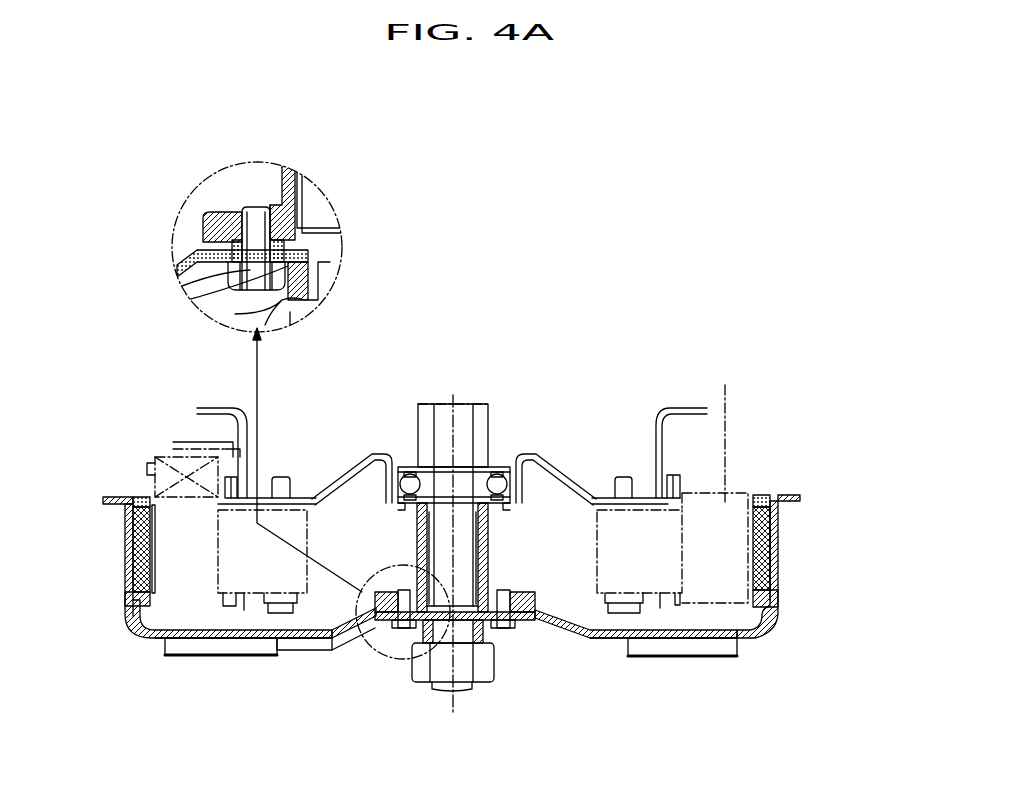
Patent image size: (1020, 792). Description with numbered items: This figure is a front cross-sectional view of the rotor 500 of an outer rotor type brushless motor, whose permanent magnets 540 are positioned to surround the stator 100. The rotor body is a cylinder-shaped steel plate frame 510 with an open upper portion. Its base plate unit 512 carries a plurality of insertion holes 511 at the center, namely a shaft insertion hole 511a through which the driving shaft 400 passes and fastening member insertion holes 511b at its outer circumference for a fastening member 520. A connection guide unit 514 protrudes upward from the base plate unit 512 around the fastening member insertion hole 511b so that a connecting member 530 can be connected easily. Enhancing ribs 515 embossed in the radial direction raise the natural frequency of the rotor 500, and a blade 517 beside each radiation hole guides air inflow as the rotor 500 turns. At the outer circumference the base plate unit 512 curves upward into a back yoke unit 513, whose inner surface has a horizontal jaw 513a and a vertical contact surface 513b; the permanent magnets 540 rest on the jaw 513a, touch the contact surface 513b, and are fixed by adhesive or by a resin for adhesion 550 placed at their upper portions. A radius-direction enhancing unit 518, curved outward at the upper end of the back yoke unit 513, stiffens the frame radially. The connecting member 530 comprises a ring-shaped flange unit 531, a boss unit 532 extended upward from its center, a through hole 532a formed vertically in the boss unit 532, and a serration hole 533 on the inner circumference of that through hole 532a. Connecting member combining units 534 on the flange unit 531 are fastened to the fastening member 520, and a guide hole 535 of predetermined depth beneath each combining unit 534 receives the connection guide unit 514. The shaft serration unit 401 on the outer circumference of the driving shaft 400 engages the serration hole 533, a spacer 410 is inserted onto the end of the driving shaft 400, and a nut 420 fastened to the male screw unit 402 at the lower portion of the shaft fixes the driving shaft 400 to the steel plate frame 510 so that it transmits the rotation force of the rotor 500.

The stator 100 is at (452, 487).
The driving shaft 400 is at (410, 440).
The shaft serration unit 401 is at (420, 585).
The male screw unit 402 is at (483, 632).
The spacer 410 is at (440, 615).
The nut 420 is at (482, 665).
The rotor 500 is at (100, 482).
The steel plate frame 510 is at (141, 639).
The insertion holes 511 is at (375, 131).
The shaft insertion hole 511a is at (310, 256).
The fastening member insertion holes 511b is at (266, 233).
The base plate unit 512 is at (310, 638).
The back yoke unit 513 is at (128, 566).
The jaw 513a is at (775, 598).
The contact surface 513b is at (780, 527).
The connection guide unit 514 is at (232, 250).
The enhancing ribs 515 is at (320, 655).
The blade 517 is at (183, 655).
The radius-direction enhancing unit 518 is at (788, 496).
The fastening member 520 is at (238, 268).
The connecting member 530 is at (492, 572).
The flange unit 531 is at (228, 228).
The boss unit 532 is at (497, 568).
The through hole 532a is at (444, 512).
The serration hole 533 is at (470, 530).
The connecting member combining units 534 is at (252, 214).
The guide hole 535 is at (300, 262).
The permanent magnets 540 is at (134, 540).
The resin for adhesion 550 is at (762, 496).